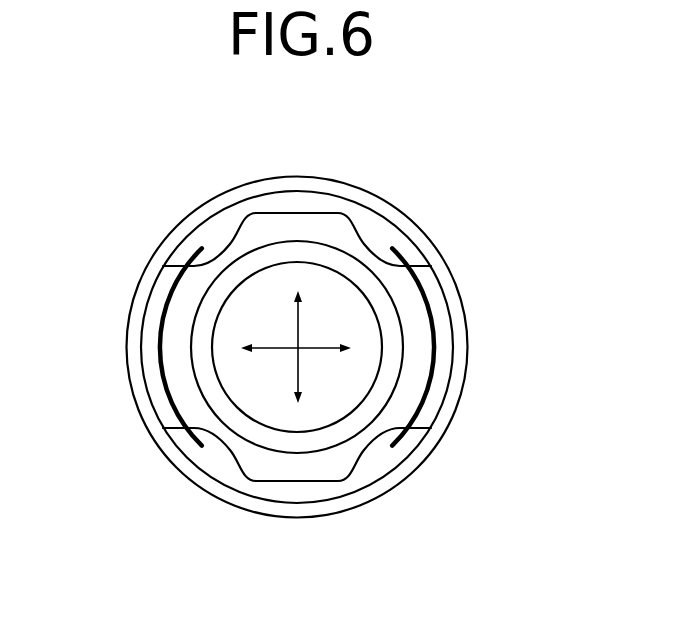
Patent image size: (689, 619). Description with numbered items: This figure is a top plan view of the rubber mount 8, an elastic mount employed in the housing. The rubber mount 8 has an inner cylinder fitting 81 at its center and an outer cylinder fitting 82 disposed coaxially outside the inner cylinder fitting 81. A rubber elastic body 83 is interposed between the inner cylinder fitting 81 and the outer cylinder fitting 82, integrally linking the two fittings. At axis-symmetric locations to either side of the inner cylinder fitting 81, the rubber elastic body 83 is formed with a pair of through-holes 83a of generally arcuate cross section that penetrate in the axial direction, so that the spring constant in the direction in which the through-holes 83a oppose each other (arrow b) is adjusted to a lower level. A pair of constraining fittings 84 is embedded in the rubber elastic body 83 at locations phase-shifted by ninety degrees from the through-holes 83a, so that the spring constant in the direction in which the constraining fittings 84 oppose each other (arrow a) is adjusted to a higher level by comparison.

The rubber mount 8 is at (438, 195).
The inner cylinder fitting 81 is at (258, 263).
The outer cylinder fitting 82 is at (250, 503).
The rubber elastic body 83 is at (145, 345).
The through-hole 83a is at (309, 214).
The constraining fitting 84 is at (166, 400).